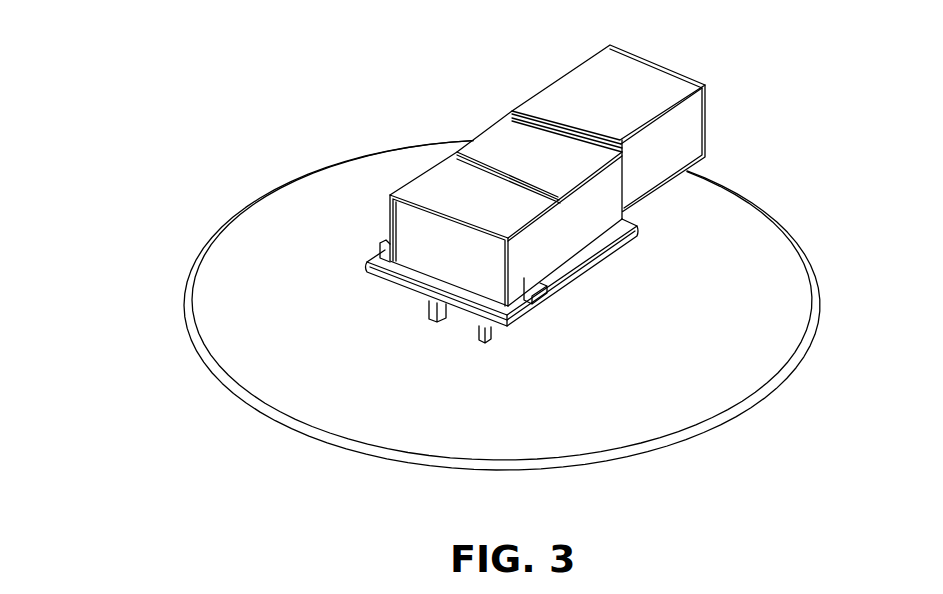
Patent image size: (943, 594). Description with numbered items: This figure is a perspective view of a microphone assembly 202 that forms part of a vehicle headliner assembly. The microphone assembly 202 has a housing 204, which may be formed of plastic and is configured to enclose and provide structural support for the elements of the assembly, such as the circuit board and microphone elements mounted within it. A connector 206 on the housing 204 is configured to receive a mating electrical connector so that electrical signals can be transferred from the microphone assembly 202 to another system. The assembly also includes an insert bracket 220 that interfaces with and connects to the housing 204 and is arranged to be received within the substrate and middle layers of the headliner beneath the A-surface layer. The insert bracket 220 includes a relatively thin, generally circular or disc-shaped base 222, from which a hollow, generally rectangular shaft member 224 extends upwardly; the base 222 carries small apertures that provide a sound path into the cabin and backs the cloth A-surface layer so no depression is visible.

The microphone assembly 202 is at (456, 206).
The housing 204 is at (407, 225).
The connector 206 is at (645, 78).
The insert bracket 220 is at (740, 398).
The base 222 is at (393, 400).
The shaft member 224 is at (432, 313).